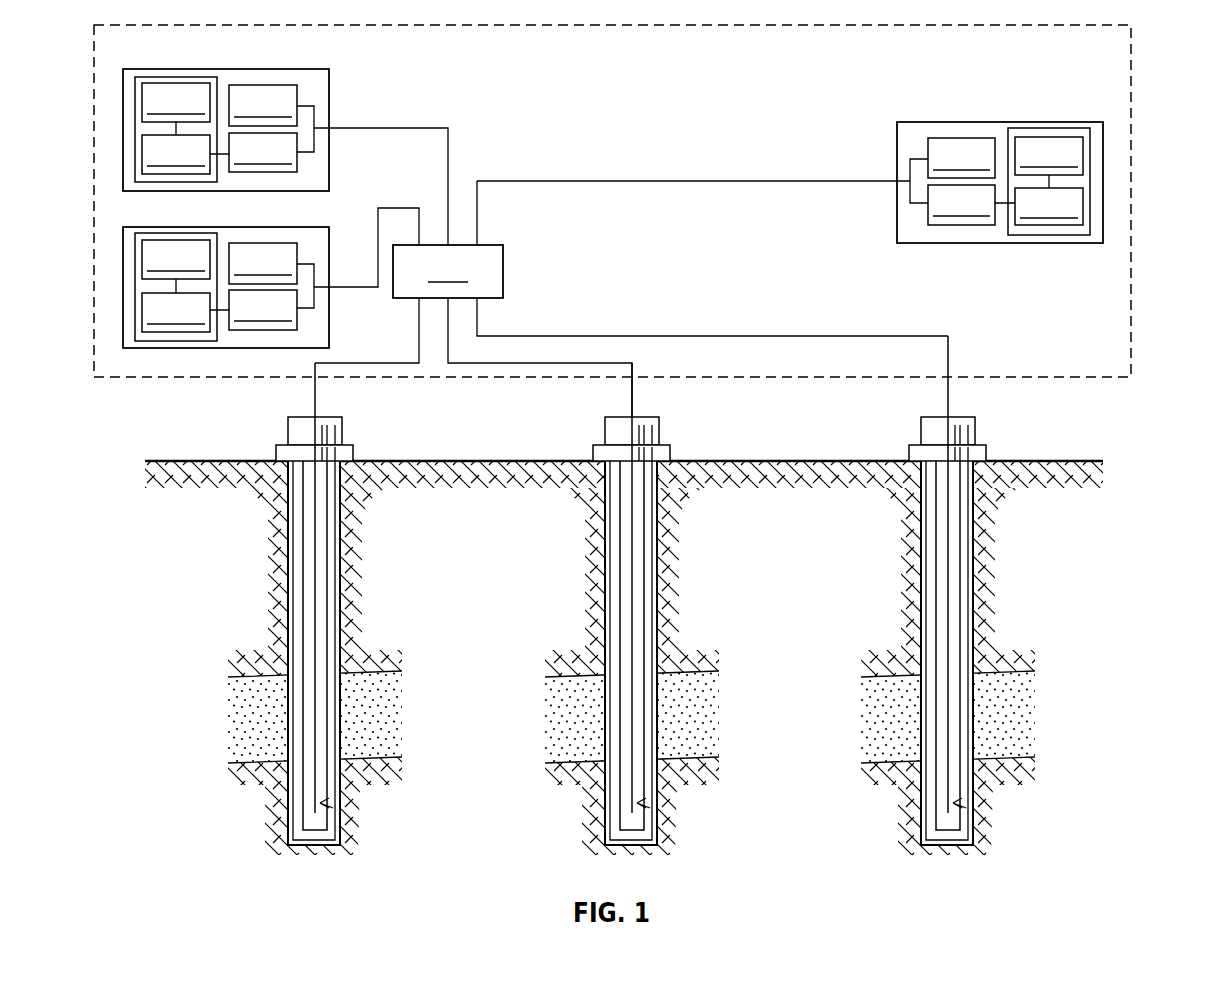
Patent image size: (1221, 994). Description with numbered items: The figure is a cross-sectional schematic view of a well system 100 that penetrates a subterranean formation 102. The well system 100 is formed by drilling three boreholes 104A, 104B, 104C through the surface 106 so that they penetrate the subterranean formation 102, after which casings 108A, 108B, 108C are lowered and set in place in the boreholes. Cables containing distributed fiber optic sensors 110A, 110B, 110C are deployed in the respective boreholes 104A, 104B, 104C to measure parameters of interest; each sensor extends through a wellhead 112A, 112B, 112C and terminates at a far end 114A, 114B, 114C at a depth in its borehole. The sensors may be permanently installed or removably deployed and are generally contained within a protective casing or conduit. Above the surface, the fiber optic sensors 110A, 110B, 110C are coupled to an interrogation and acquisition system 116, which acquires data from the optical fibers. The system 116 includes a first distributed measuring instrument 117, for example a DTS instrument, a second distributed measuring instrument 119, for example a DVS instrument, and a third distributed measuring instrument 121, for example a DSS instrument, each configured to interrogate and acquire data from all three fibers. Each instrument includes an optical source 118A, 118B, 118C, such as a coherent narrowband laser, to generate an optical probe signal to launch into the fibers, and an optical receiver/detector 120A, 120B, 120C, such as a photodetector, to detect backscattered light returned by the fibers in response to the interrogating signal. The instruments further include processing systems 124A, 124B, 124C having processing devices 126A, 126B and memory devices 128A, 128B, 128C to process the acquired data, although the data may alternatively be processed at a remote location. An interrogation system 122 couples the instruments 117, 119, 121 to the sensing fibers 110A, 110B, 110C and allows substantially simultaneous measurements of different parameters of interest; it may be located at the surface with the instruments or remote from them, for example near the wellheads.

The well system 100 is at (1106, 413).
The subterranean formation 102 is at (395, 723).
The borehole 104A is at (341, 543).
The borehole 104B is at (685, 645).
The borehole 104C is at (1001, 645).
The surface 106 is at (1035, 461).
The casing 108A is at (305, 588).
The casing 108B is at (585, 653).
The casing 108C is at (901, 653).
The distributed fiber optic sensor 110A is at (317, 618).
The distributed fiber optic sensor 110B is at (689, 588).
The distributed fiber optic sensor 110C is at (1005, 574).
The wellhead 112A is at (330, 417).
The wellhead 112B is at (660, 422).
The wellhead 112C is at (976, 422).
The far end 114A is at (333, 808).
The far end 114B is at (693, 820).
The far end 114C is at (1009, 820).
The interrogation and acquisition system 116 is at (1131, 138).
The first distributed measuring instrument 117 is at (272, 139).
The optical source 118A is at (263, 105).
The optical source 118B is at (263, 263).
The optical source 118C is at (961, 158).
The second distributed measuring instrument 119 is at (258, 268).
The optical receiver/detector 120A is at (263, 152).
The optical receiver/detector 120B is at (263, 310).
The optical receiver/detector 120C is at (961, 205).
The third distributed measuring instrument 121 is at (790, 154).
The interrogation system 122 is at (631, 331).
The processing system 124A is at (157, 107).
The processing system 124B is at (157, 265).
The processing system 124C is at (1052, 149).
The processing device 126A is at (176, 102).
The processing device 126B is at (176, 259).
The memory device 128A is at (176, 154).
The memory device 128B is at (176, 312).
The memory device 128C is at (1049, 128).